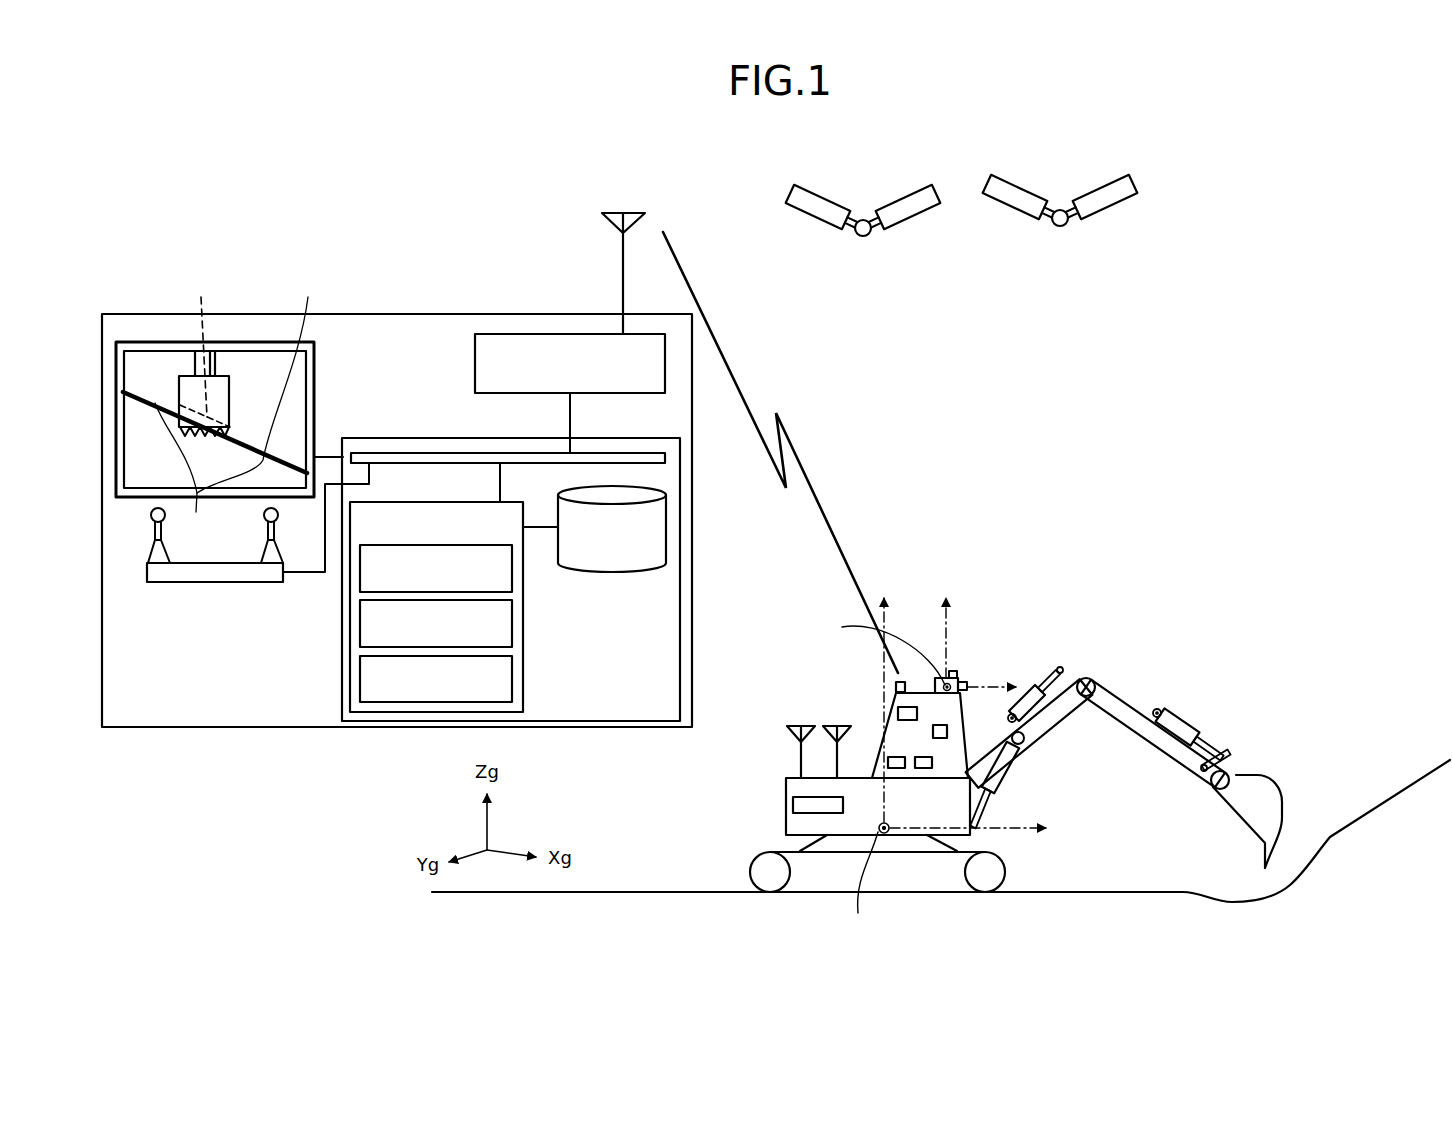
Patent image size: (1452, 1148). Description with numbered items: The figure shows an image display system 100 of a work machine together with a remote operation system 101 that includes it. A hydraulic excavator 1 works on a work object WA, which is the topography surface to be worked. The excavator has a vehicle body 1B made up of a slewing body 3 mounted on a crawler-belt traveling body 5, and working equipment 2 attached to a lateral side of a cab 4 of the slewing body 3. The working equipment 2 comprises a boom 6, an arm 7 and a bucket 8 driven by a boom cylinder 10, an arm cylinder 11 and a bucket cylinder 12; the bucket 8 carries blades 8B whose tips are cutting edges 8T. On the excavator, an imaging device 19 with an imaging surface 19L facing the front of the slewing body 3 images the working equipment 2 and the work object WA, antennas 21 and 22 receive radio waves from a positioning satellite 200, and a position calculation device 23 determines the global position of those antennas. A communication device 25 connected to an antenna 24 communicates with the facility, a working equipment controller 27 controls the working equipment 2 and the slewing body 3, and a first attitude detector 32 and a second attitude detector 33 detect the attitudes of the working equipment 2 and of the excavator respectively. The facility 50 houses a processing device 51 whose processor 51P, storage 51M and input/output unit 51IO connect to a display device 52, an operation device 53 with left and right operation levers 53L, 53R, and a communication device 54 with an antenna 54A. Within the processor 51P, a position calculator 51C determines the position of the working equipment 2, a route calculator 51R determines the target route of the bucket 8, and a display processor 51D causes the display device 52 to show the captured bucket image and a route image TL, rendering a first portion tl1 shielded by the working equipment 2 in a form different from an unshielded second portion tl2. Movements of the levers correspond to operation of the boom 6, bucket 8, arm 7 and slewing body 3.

The image display system 100 is at (566, 168).
The remote operation system 101 is at (1292, 362).
The positioning satellite 200 is at (820, 195).
The facility 50 is at (420, 314).
The display device 52 is at (147, 342).
The operation device 53 is at (241, 567).
The left operation lever 53L is at (151, 520).
The right operation lever 53R is at (263, 520).
The communication device 54 is at (515, 334).
The antenna 54A is at (610, 213).
The processing device 51 is at (605, 438).
The input/output unit 51IO is at (455, 453).
The processor 51P is at (515, 502).
The position calculator 51C is at (512, 567).
The route calculator 51R is at (512, 620).
The display processor 51D is at (512, 676).
The storage 51M is at (640, 572).
The first portion tl1 is at (203, 345).
The second portion tl2 is at (181, 469).
The route image TL is at (276, 383).
The hydraulic excavator 1 is at (1002, 614).
The vehicle body 1B is at (835, 835).
The working equipment 2 is at (1150, 688).
The slewing body 3 is at (783, 826).
The cab 4 is at (876, 762).
The traveling body 5 is at (843, 875).
The boom 6 is at (1036, 733).
The arm 7 is at (1137, 723).
The bucket 8 is at (1243, 786).
The blade 8B is at (1263, 845).
The cutting edge 8T is at (1263, 873).
The boom cylinder 10 is at (990, 812).
The arm cylinder 11 is at (1030, 693).
The bucket cylinder 12 is at (1178, 725).
The imaging device 19 is at (945, 680).
The imaging surface 19L is at (967, 684).
The antenna 21 is at (837, 726).
The antenna 22 is at (795, 726).
The position calculation device 23 is at (793, 805).
The antenna 24 is at (896, 687).
The communication device 25 is at (917, 712).
The working equipment controller 27 is at (932, 762).
The first attitude detector 32 is at (896, 770).
The second attitude detector 33 is at (933, 731).
The work object WA is at (1313, 824).